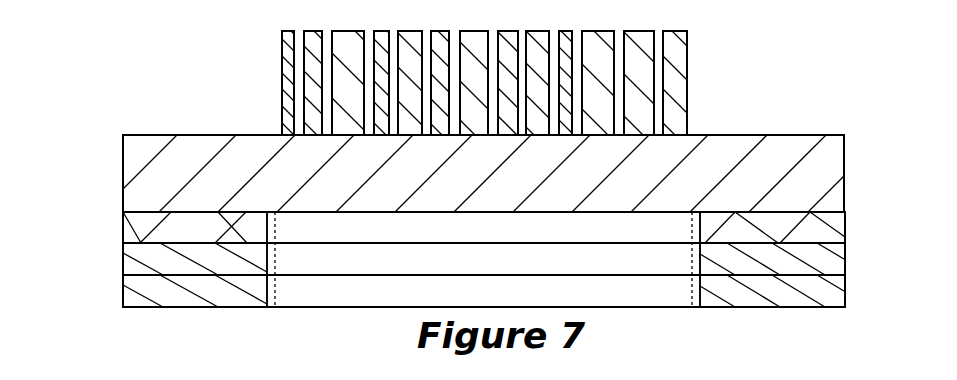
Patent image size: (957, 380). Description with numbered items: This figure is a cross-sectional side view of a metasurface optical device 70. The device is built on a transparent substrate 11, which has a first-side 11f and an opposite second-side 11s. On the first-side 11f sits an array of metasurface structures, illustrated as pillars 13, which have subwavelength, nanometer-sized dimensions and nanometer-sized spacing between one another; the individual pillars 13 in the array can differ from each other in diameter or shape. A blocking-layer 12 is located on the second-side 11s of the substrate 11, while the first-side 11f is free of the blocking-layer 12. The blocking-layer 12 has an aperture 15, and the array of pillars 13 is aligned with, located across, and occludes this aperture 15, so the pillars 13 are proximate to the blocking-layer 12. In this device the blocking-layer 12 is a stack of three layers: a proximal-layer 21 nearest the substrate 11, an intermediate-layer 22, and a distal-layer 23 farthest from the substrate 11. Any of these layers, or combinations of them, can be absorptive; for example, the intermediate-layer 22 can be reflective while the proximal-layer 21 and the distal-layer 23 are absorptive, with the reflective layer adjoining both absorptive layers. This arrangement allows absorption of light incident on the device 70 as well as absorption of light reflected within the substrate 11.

The metasurface optical device 70 is at (145, 52).
The transparent substrate 11 is at (498, 186).
The first-side 11f is at (738, 137).
The second-side 11s is at (783, 210).
The pillars 13 is at (712, 100).
The blocking-layer 12 is at (121, 307).
The proximal-layer 21 is at (215, 240).
The intermediate-layer 22 is at (215, 271).
The distal-layer 23 is at (215, 303).
The aperture 15 is at (498, 271).